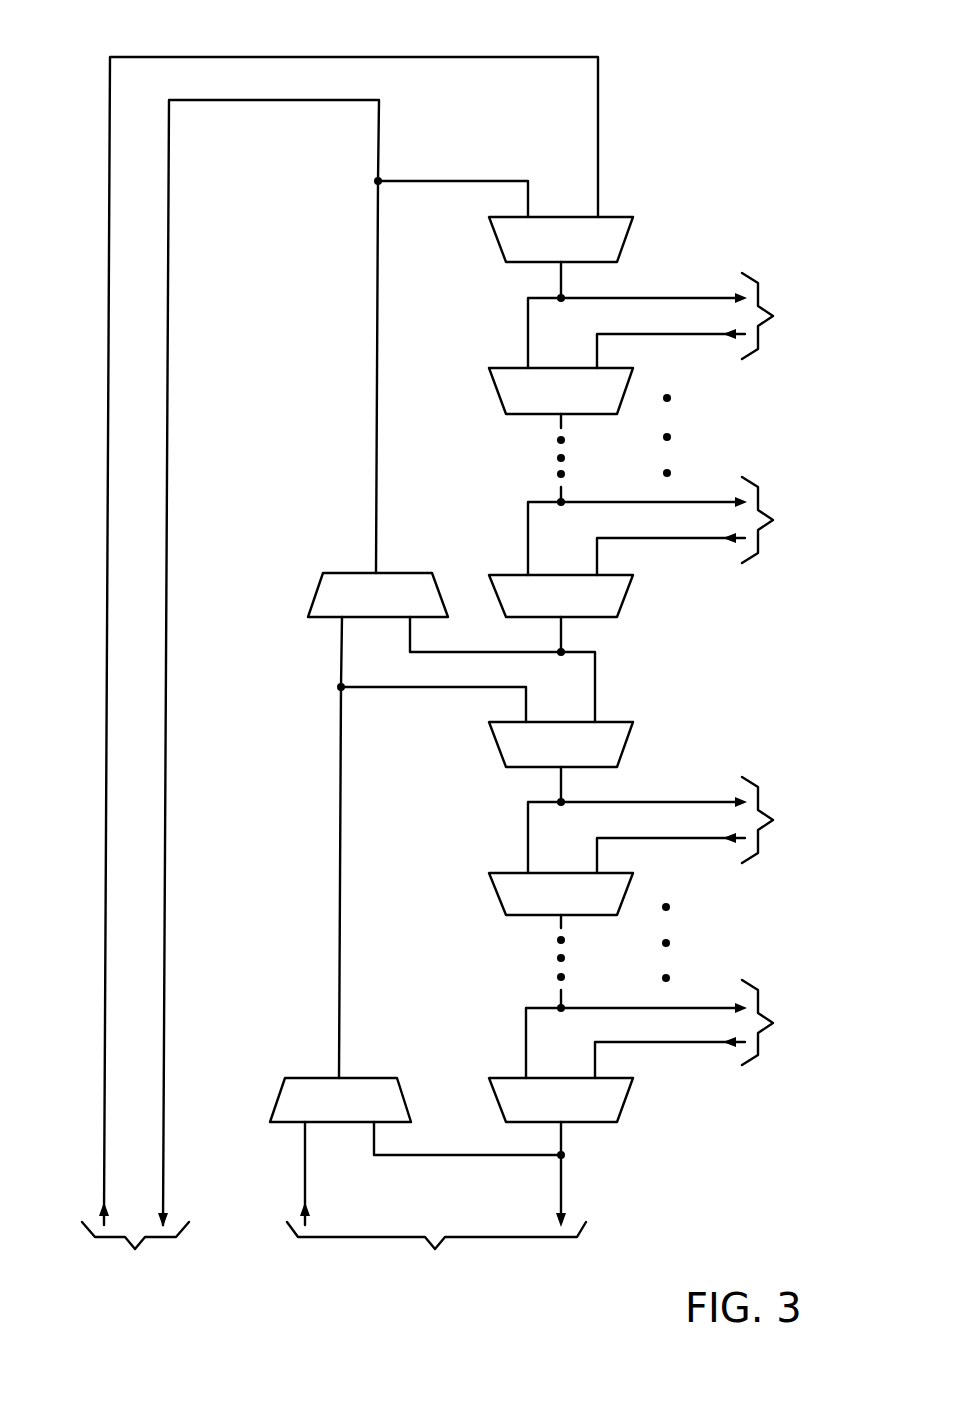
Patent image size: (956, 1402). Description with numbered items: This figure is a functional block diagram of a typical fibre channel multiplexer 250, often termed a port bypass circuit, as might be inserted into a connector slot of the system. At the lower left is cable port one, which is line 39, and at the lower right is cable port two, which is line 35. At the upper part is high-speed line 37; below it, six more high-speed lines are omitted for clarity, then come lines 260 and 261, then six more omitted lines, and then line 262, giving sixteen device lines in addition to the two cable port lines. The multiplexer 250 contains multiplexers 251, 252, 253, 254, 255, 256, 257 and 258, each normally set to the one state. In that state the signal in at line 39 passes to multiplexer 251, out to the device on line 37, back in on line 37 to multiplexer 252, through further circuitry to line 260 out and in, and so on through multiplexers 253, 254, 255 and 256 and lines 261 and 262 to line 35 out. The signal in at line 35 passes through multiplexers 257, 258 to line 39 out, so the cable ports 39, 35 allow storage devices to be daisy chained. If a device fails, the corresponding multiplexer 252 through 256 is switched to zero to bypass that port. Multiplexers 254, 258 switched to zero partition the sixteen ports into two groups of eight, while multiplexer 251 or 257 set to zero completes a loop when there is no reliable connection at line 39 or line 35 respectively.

The fibre channel multiplexer 250 is at (446, 32).
The multiplexer 251 is at (497, 239).
The multiplexer 252 is at (496, 394).
The multiplexer 253 is at (627, 596).
The multiplexer 254 is at (497, 745).
The multiplexer 255 is at (493, 898).
The multiplexer 256 is at (627, 1095).
The multiplexer 257 is at (278, 1095).
The multiplexer 258 is at (316, 592).
The high-speed line 37 is at (771, 316).
The high-speed line 260 is at (777, 520).
The high-speed line 261 is at (777, 820).
The high-speed line 262 is at (776, 1022).
The cable port 1 line 39 is at (135, 1264).
The cable port 2 line 35 is at (436, 1264).